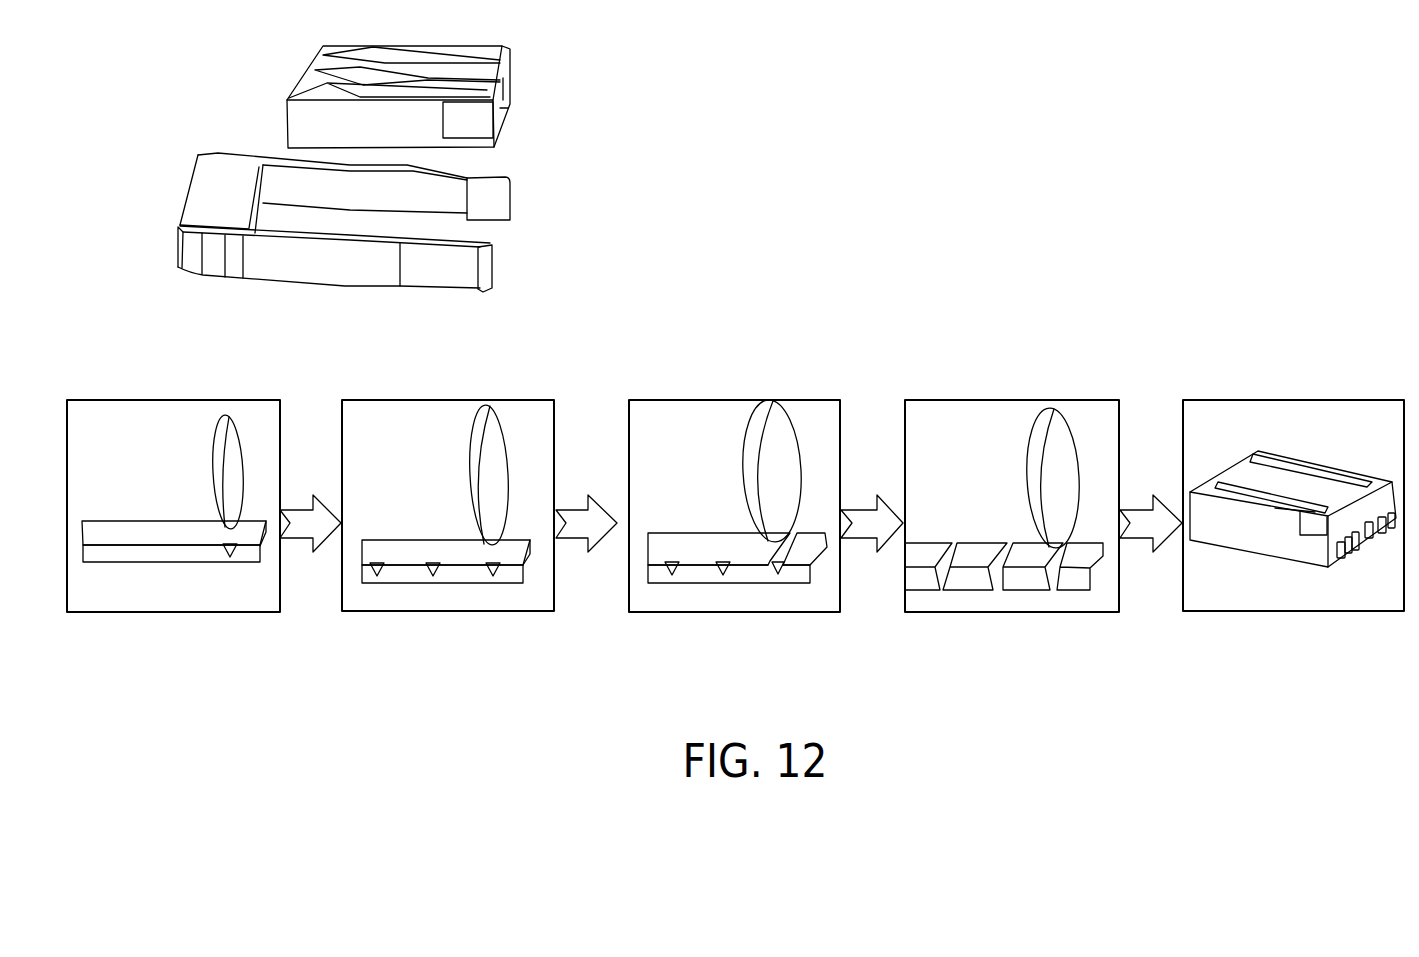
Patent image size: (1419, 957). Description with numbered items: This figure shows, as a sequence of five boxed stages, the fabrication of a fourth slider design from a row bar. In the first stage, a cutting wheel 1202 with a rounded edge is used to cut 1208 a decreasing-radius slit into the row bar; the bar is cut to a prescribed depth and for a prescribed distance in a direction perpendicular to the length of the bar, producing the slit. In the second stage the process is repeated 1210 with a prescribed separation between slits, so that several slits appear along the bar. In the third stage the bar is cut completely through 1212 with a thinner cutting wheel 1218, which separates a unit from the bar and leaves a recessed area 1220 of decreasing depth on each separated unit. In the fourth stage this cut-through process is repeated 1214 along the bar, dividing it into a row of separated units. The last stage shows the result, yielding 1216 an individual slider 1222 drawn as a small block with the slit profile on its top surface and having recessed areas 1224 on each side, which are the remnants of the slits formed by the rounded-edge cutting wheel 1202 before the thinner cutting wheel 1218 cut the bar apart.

The cutting wheel 1202 is at (230, 445).
The cutting step 1208 is at (162, 613).
The repeated cutting step 1210 is at (433, 613).
The cutting-through step 1212 is at (693, 612).
The repeated cutting-through step 1214 is at (998, 613).
The yielding step 1216 is at (1278, 613).
The thinner cutting wheel 1218 is at (792, 443).
The recessed area 1220 is at (779, 575).
The individual slider 1222 is at (1253, 478).
The recessed area 1224 is at (1357, 470).